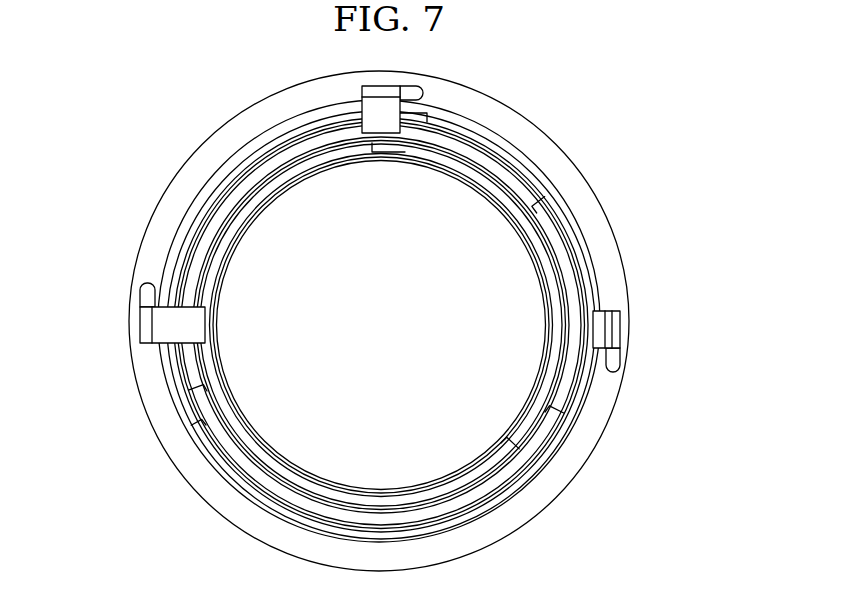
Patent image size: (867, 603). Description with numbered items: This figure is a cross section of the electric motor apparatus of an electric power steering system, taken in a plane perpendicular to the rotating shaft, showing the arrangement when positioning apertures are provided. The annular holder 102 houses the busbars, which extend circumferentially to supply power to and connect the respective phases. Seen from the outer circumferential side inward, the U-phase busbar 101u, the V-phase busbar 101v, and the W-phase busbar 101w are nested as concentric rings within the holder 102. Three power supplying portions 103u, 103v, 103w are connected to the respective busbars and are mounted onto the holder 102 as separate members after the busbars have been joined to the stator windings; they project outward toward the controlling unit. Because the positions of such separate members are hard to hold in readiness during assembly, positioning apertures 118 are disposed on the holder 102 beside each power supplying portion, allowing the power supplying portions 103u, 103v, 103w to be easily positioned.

The holder 102 is at (178, 198).
The U-phase busbar 101u is at (556, 185).
The V-phase busbar 101v is at (597, 262).
The W-phase busbar 101w is at (487, 478).
The U-phase power supplying portion 103u is at (620, 333).
The V-phase power supplying portion 103v is at (362, 109).
The W-phase power supplying portion 103w is at (150, 327).
The positioning aperture 118 is at (423, 93).